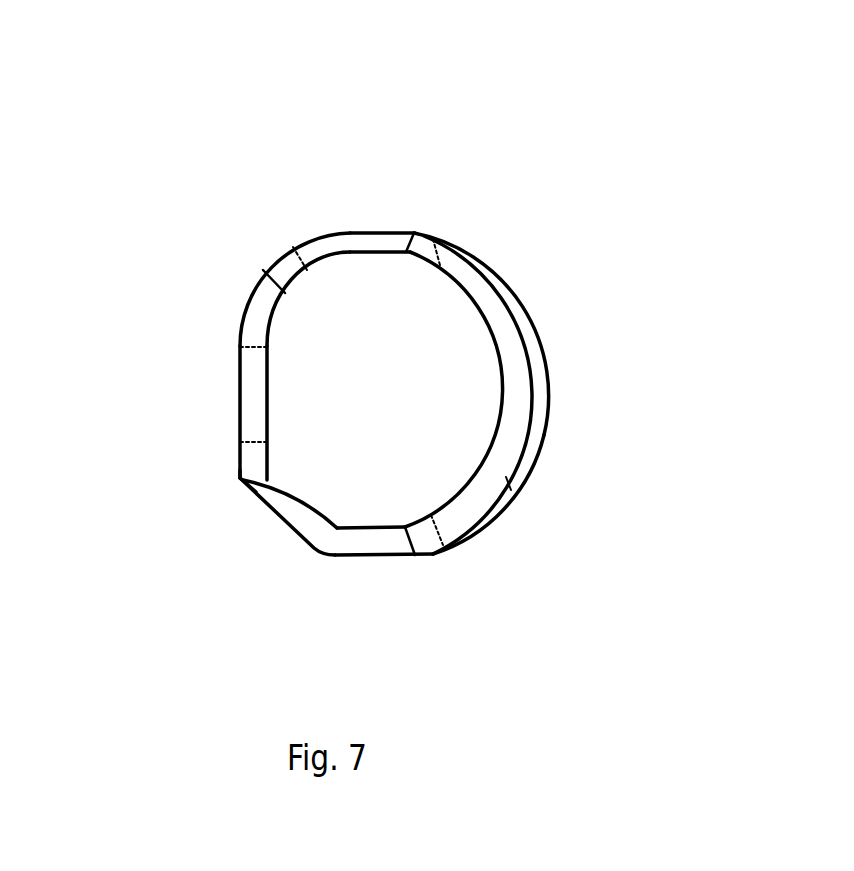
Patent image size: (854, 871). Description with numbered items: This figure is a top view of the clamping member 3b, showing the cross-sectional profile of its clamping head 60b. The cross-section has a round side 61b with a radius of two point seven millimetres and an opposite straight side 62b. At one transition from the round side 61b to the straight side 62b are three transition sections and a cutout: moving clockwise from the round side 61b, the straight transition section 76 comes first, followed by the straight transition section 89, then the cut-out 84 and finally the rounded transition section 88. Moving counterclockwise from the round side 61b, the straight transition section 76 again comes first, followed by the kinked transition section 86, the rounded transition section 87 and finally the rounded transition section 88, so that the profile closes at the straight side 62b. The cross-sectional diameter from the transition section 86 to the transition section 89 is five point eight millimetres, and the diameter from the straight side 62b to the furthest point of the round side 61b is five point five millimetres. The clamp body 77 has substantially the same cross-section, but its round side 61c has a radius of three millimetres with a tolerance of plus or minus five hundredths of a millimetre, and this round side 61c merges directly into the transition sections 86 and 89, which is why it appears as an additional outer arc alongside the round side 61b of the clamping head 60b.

The clamping member 3b is at (136, 141).
The clamping head 60b is at (370, 380).
The round side 61b is at (508, 483).
The round side 61c is at (543, 435).
The straight side 62b is at (237, 377).
The straight transition section 76 is at (440, 237).
The clamp body 77 is at (531, 308).
The cutout 84 is at (310, 520).
The kinked transition section 86 is at (372, 230).
The rounded transition section 87 is at (276, 259).
The rounded transition section 88 is at (245, 307).
The straight transition section 89 is at (373, 557).